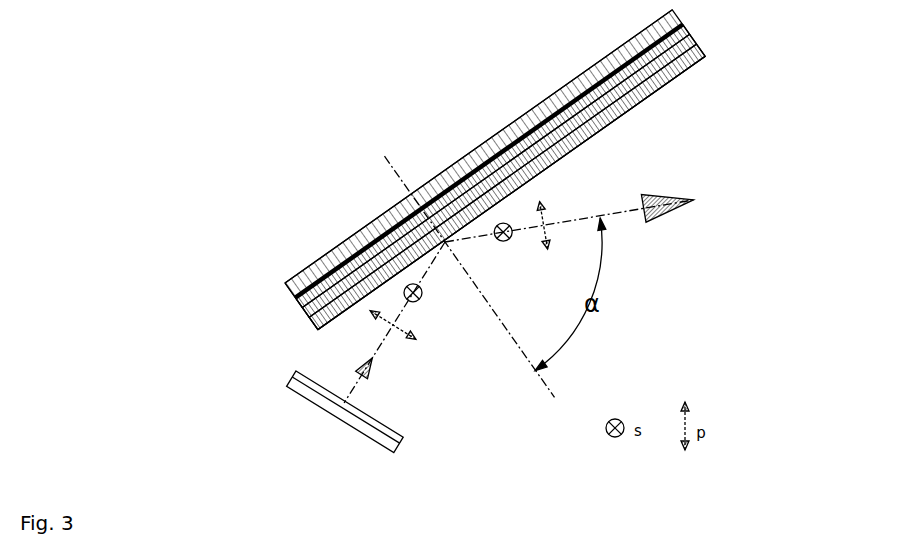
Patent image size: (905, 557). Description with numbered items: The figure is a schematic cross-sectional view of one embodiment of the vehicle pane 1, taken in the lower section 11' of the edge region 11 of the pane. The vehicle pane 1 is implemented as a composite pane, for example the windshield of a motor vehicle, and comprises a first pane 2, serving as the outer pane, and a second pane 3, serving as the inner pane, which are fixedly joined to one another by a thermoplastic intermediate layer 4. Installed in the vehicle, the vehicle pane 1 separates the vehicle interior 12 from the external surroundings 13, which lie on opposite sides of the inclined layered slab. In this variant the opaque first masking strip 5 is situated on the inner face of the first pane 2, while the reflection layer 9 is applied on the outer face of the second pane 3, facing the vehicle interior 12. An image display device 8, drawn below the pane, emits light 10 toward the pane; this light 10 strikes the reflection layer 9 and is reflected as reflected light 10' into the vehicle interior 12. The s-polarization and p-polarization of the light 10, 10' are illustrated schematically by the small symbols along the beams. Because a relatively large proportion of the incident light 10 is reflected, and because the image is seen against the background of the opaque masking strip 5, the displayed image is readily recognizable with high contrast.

The vehicle pane 1 is at (302, 208).
The first pane 2 is at (667, 32).
The second pane 3 is at (682, 68).
The thermoplastic intermediate layer 4 is at (690, 42).
The first masking strip 5 is at (529, 133).
The image display device 8 is at (286, 386).
The reflection layer 9 is at (302, 317).
The light 10 is at (394, 322).
The reflected light 10' is at (569, 202).
The edge region 11 is at (434, 154).
The lower section 11' is at (511, 192).
The vehicle interior 12 is at (700, 161).
The external surroundings 13 is at (450, 136).